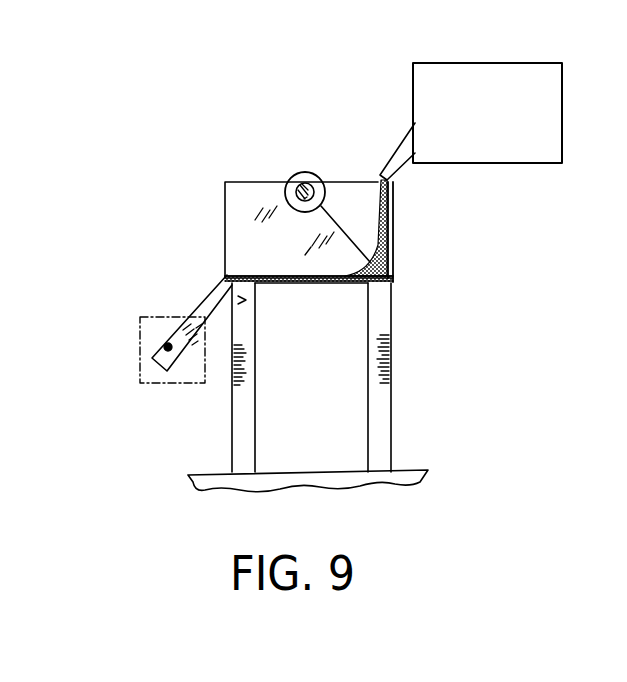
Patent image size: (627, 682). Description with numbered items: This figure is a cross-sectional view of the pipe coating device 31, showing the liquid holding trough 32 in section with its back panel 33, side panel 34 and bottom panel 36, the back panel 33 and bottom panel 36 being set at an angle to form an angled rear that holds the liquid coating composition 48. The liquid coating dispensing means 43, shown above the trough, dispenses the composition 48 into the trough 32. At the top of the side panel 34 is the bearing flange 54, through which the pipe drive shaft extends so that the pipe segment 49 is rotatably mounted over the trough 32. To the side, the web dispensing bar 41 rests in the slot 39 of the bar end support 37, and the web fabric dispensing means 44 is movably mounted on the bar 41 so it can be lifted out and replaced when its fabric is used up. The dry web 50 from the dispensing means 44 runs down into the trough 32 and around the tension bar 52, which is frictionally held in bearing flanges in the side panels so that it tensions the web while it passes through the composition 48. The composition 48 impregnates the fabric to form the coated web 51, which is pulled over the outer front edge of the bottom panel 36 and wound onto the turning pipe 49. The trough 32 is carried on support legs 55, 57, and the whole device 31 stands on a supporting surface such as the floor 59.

The pipe coating device 31 is at (298, 136).
The liquid holding trough 32 is at (245, 177).
The back panel 33 is at (395, 226).
The side panel 34 is at (278, 182).
The bottom panel 36 is at (325, 283).
The bar end support 37 is at (213, 337).
The slot 39 is at (171, 337).
The web dispensing bar 41 is at (164, 345).
The liquid coating dispensing means 43 is at (490, 62).
The web fabric dispensing means 44 is at (139, 358).
The liquid coating composition 48 is at (375, 217).
The pipe segment 49 is at (305, 204).
The dry web 50 is at (219, 282).
The coated web 51 is at (347, 243).
The tension bar 52 is at (393, 261).
The bearing flange 54 is at (318, 177).
The support leg 55 is at (258, 378).
The support leg 57 is at (367, 396).
The floor 59 is at (333, 470).